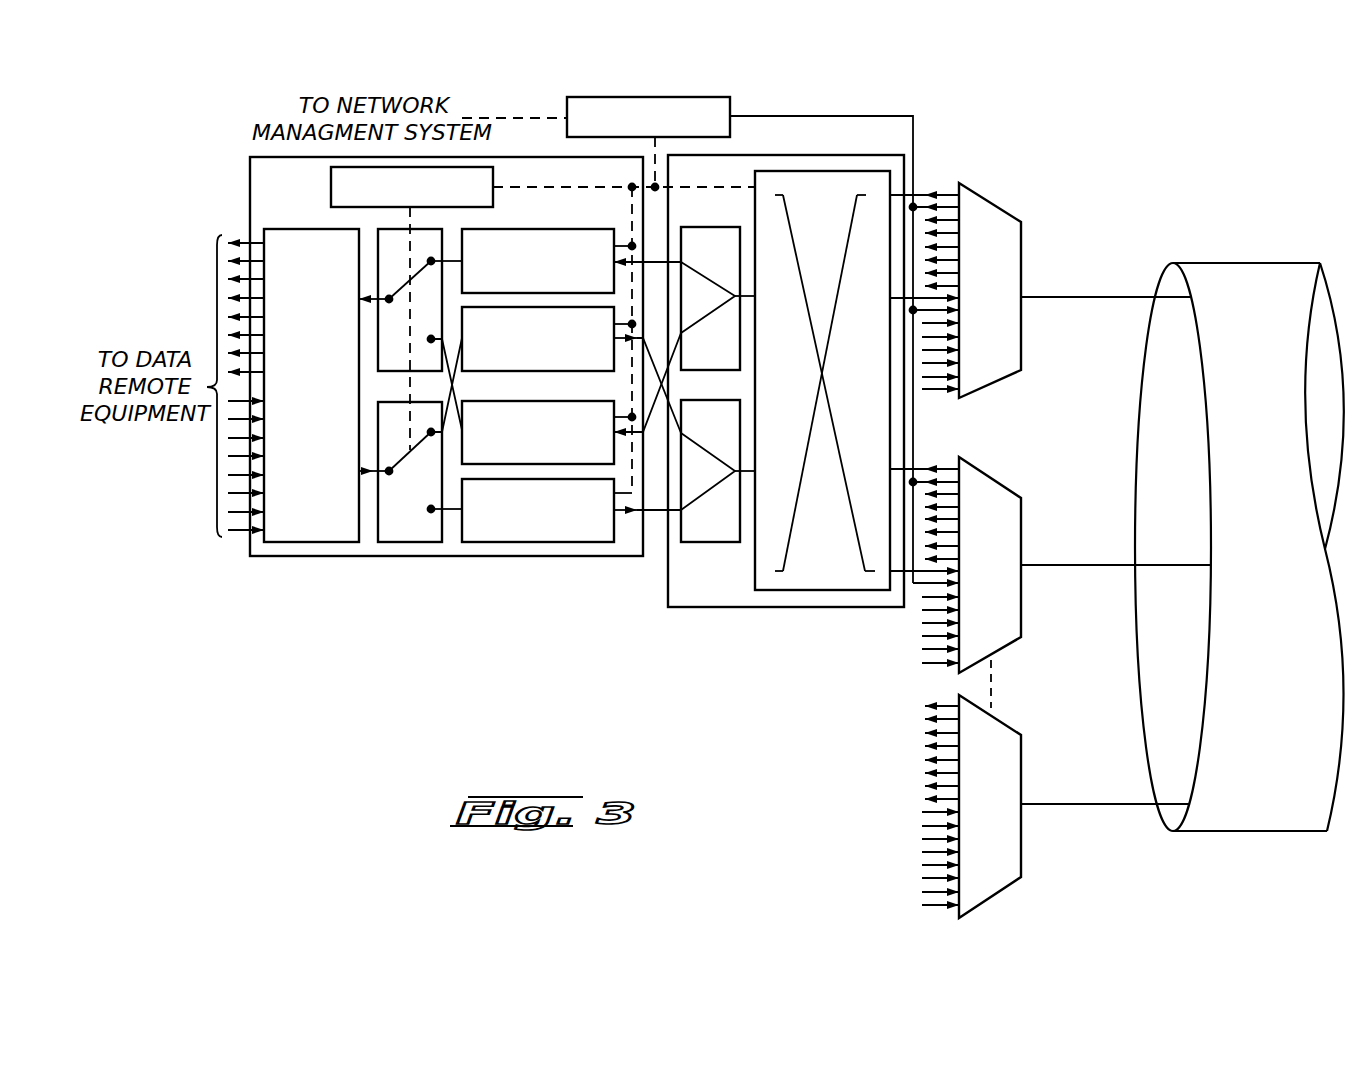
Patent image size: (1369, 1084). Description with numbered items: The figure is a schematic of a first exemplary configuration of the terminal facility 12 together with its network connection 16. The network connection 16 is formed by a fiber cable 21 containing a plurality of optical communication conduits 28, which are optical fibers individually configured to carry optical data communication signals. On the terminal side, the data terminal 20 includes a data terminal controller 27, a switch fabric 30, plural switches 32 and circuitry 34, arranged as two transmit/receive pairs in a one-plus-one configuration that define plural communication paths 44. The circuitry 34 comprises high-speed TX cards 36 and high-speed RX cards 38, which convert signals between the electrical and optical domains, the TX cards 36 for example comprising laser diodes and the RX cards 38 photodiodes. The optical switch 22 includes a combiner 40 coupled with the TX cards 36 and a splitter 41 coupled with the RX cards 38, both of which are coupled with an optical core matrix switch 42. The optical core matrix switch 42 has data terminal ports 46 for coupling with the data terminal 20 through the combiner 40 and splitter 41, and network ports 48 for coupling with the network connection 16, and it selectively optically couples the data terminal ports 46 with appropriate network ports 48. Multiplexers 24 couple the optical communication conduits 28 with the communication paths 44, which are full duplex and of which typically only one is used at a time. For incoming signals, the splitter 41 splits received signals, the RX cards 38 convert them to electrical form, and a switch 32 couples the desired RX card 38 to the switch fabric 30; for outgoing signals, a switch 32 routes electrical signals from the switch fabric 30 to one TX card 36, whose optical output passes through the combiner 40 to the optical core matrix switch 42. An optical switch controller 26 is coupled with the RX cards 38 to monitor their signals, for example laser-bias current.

The terminal facility 12 is at (1130, 160).
The network connection 16 is at (1220, 220).
The data terminal 20 is at (250, 187).
The fiber cable 21 is at (1245, 833).
The optical switch 22 is at (838, 153).
The multiplexers 24 is at (1022, 355).
The optical switch controller 26 is at (733, 128).
The data terminal controller 27 is at (497, 180).
The optical communication conduits 28 is at (1078, 300).
The switch fabric 30 is at (318, 557).
The switches 32 is at (418, 377).
The circuitry 34 is at (538, 566).
The high-speed transmit (TX) cards 36 is at (530, 374).
The high-speed receive (RX) cards 38 is at (563, 228).
The combiner 40 is at (720, 544).
The splitter 41 is at (722, 228).
The optical core matrix switch 42 is at (788, 597).
The communication paths 44 is at (353, 317).
The data terminal ports 46 is at (802, 197).
The network ports 48 is at (885, 187).